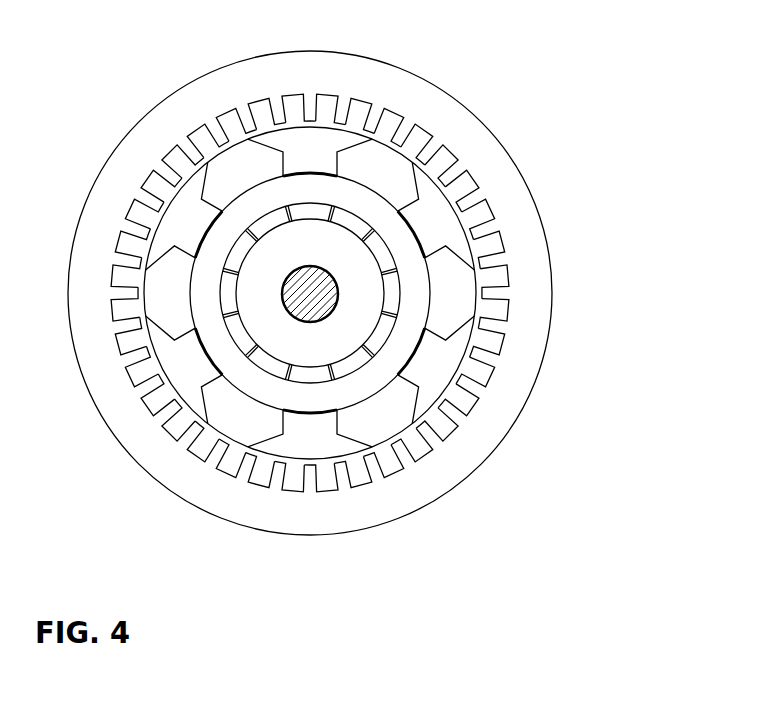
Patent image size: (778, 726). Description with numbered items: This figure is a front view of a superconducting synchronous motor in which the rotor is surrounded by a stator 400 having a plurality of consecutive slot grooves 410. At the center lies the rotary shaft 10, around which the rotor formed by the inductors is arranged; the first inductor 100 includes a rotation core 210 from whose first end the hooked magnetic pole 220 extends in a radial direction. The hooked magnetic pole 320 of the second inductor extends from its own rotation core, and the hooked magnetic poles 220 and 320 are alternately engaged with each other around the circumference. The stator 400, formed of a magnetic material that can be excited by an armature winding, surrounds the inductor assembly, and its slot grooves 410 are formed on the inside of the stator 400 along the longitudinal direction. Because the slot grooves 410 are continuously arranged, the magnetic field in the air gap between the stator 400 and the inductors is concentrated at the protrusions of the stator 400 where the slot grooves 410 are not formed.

The rotary shaft 10 is at (325, 303).
The first inductor 100 is at (418, 248).
The rotation core 210 is at (275, 352).
The hooked magnetic pole 220 is at (178, 375).
The hooked magnetic pole 320 is at (312, 450).
The stator 400 is at (523, 383).
The slot grooves 410 is at (515, 275).